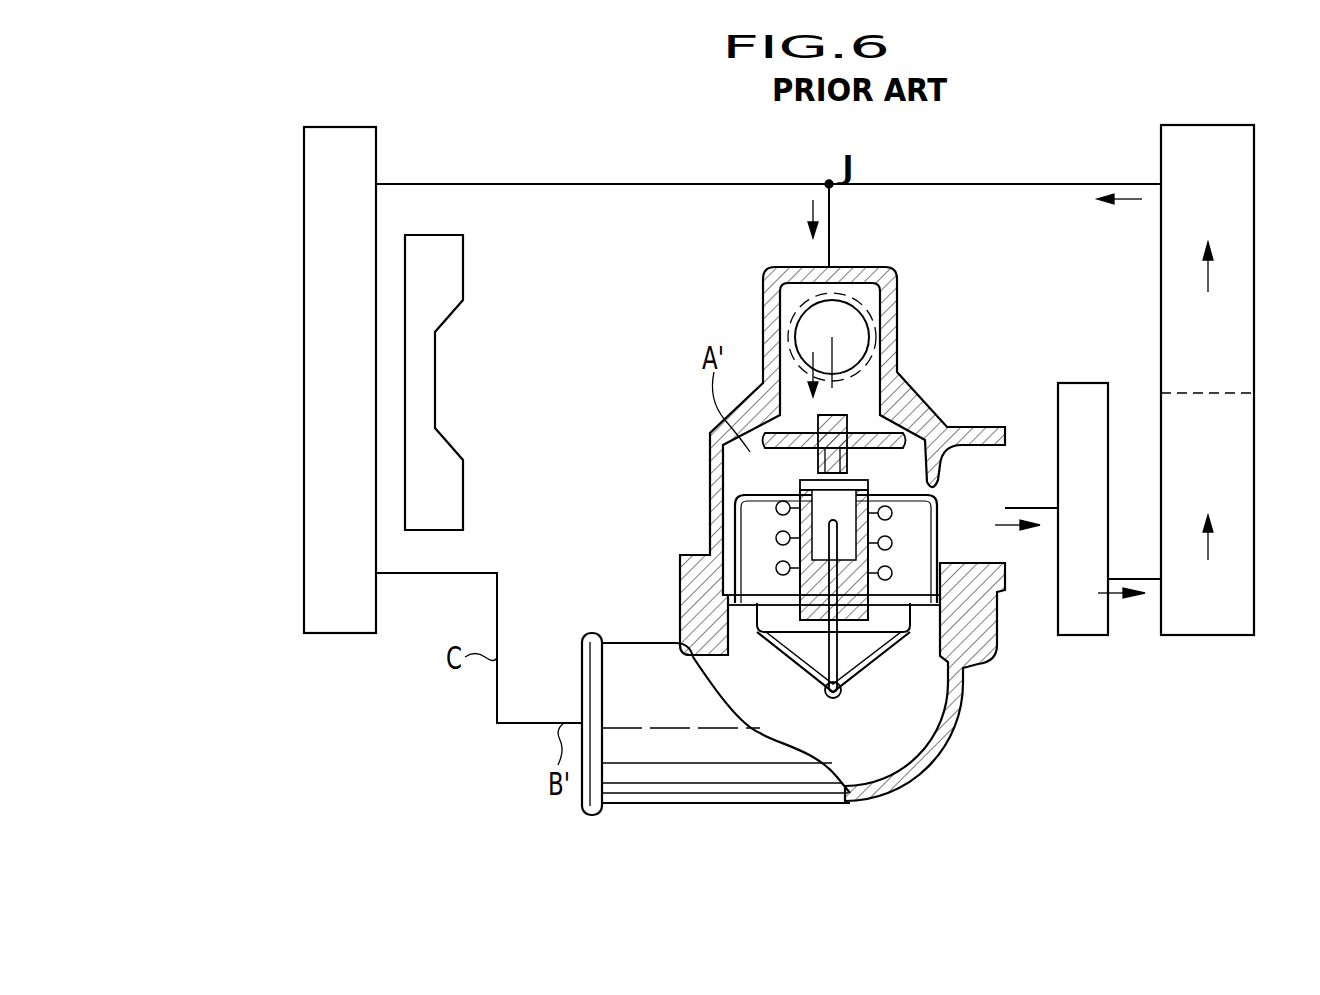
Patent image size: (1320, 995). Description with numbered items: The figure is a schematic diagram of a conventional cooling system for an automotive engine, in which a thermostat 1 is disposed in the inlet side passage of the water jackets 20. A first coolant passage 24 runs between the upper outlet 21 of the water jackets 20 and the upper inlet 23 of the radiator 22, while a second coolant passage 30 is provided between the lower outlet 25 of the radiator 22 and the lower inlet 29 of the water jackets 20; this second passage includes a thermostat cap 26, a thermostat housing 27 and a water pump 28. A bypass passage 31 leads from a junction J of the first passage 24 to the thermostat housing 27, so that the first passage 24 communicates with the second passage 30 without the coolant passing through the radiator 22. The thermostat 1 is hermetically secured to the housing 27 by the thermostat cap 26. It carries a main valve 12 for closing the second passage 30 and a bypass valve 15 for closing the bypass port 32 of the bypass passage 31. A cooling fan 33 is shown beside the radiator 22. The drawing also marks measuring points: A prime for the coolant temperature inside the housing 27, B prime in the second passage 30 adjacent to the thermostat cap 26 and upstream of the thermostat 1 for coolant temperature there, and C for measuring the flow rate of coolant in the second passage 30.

The thermostat 1 is at (890, 692).
The main valve 12 is at (770, 587).
The bypass valve 15 is at (920, 406).
The water jackets 20 is at (1161, 258).
The upper outlet 21 is at (1160, 184).
The radiator 22 is at (304, 190).
The upper inlet 23 is at (378, 184).
The first coolant passage 24 is at (735, 184).
The lower outlet 25 is at (378, 576).
The thermostat cap 26 is at (745, 805).
The thermostat housing 27 is at (712, 464).
The water pump 28 is at (1083, 383).
The lower inlet 29 is at (1156, 592).
The second coolant passage 30 is at (988, 507).
The bypass passage 31 is at (830, 228).
The bypass port 32 is at (870, 397).
The cooling fan 33 is at (463, 272).